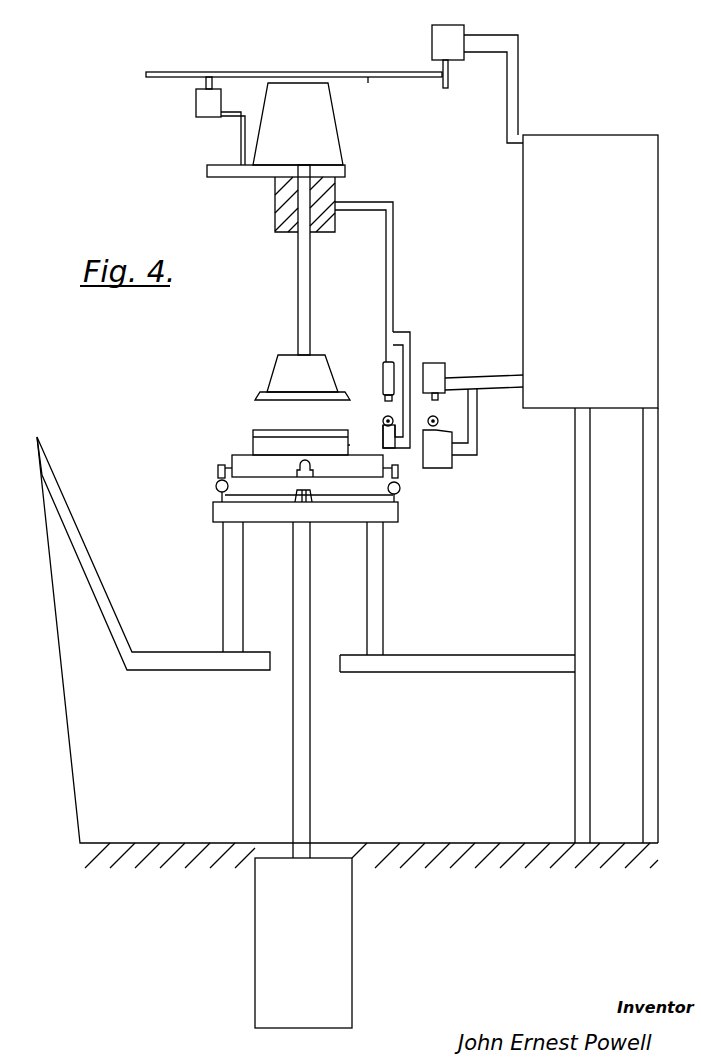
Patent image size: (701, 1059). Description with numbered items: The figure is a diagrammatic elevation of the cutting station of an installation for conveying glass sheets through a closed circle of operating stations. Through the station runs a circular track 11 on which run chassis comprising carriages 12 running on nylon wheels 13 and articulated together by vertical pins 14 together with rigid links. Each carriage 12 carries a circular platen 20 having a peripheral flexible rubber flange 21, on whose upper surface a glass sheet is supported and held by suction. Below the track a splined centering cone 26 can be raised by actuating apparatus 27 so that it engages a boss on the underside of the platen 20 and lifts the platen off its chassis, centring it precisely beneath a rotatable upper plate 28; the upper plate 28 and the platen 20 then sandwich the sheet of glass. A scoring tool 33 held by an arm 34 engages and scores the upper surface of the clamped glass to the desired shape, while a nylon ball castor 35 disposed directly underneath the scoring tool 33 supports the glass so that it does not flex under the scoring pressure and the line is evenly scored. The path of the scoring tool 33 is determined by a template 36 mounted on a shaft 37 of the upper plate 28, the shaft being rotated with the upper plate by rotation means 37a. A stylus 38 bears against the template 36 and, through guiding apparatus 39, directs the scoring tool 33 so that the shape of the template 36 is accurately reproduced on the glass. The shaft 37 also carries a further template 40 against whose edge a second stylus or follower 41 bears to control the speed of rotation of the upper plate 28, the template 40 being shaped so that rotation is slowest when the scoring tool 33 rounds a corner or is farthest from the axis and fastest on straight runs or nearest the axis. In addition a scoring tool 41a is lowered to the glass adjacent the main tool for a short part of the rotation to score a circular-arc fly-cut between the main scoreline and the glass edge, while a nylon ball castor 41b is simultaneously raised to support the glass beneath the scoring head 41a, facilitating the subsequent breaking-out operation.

The circular track 11 is at (399, 500).
The carriage 12 is at (238, 463).
The nylon wheels 13 is at (216, 473).
The vertical pins 14 is at (310, 467).
The platen 20 is at (253, 444).
The peripheral flexible rubber flange 21 is at (351, 446).
The splined centering cone 26 is at (225, 501).
The actuating apparatus 27 is at (263, 944).
The rotatable upper plate 28 is at (262, 399).
The scoring tool 33 is at (445, 380).
The arm 34 is at (494, 381).
The nylon ball castor 35 is at (432, 417).
The template 36 is at (155, 77).
The shaft 37 is at (311, 263).
The rotation means 37a is at (333, 137).
The stylus 38 is at (449, 83).
The guiding apparatus 39 is at (535, 221).
The further template 40 is at (369, 82).
The second stylus or follower 41 is at (205, 82).
The scoring tool 41a is at (382, 378).
The nylon ball castor 41b is at (387, 416).